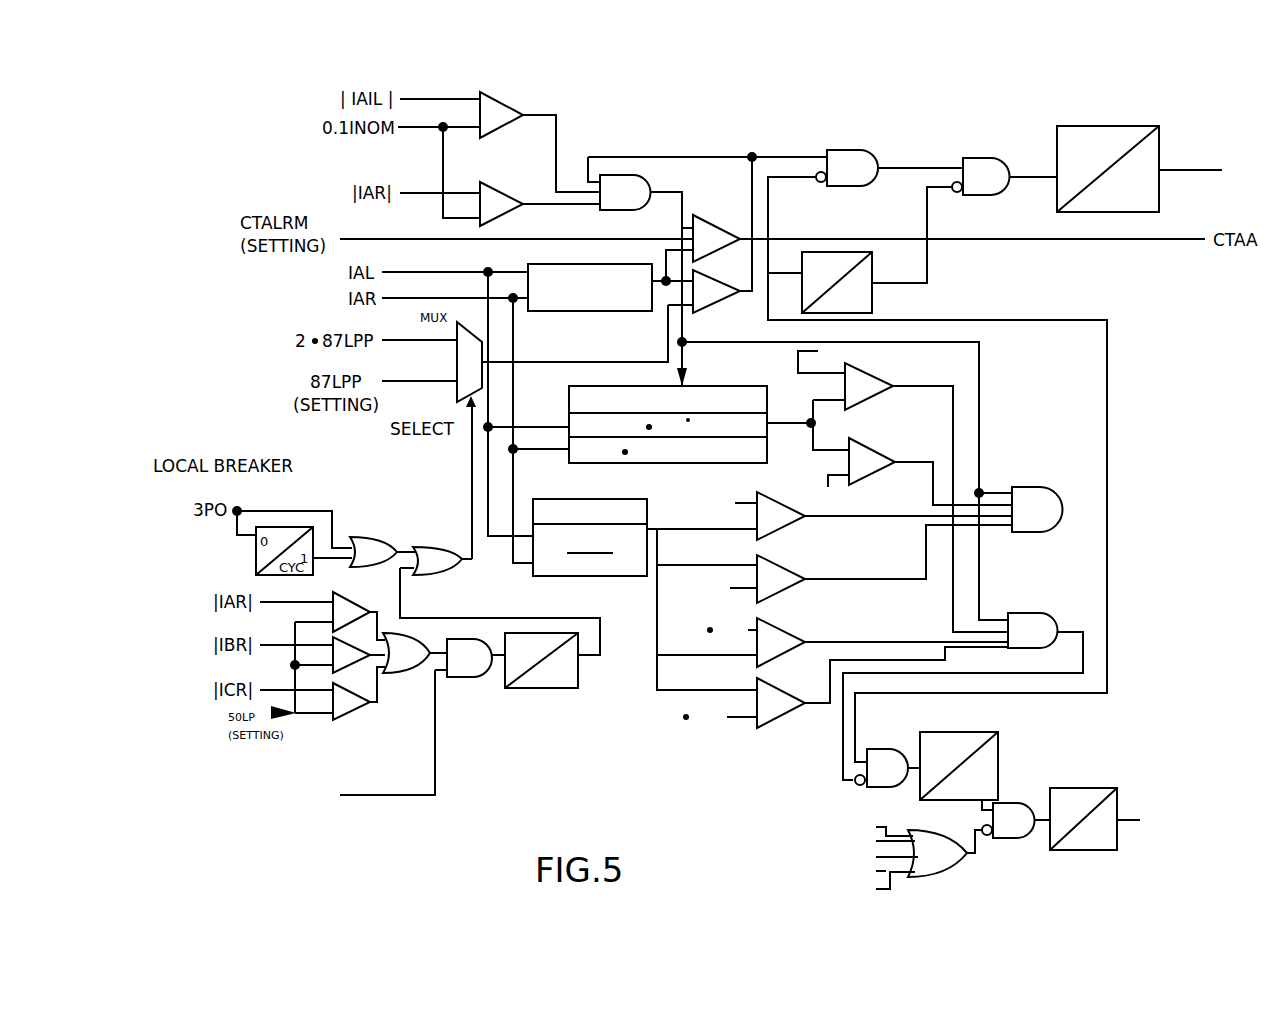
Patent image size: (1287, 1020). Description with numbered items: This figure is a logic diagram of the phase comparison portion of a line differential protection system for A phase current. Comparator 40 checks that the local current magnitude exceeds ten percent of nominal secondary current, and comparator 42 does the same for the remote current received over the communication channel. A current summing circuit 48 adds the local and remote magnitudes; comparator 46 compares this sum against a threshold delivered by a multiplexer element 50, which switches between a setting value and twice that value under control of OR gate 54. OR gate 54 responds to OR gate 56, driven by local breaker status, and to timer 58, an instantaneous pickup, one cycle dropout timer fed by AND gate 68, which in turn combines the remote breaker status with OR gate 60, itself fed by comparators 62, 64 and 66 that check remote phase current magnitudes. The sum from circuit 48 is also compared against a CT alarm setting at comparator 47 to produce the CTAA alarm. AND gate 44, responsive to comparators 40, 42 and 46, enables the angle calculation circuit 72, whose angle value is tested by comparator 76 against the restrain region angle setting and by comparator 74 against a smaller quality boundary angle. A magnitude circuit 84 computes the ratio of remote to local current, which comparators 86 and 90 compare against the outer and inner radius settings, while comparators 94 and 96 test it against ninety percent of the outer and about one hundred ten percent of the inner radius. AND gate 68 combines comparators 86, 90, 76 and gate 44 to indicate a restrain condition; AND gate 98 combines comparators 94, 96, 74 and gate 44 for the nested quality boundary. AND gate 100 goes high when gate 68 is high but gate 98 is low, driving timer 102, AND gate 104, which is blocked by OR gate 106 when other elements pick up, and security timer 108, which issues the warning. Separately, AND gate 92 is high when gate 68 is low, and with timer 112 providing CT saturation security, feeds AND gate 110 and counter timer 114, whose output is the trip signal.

The comparator 40 is at (503, 97).
The comparator 42 is at (500, 184).
The AND gate 44 is at (628, 176).
The comparator 46 is at (716, 306).
The comparator 47 is at (712, 216).
The current summing circuit 48 is at (588, 311).
The multiplexer element 50 is at (457, 358).
The OR gate 54 is at (445, 575).
The OR gate 56 is at (372, 537).
The timer 58 is at (530, 688).
The OR gate 60 is at (415, 673).
The comparator 62 is at (355, 597).
The comparator 64 is at (362, 665).
The comparator 66 is at (345, 720).
The AND gate 68 is at (1025, 487).
The angle calculation circuit 72 is at (745, 386).
The comparator 74 is at (872, 404).
The comparator 76 is at (873, 440).
The magnitude circuit 84 is at (568, 499).
The comparator 86 is at (798, 478).
The comparator 90 is at (780, 556).
The AND gate 92 is at (855, 150).
The comparator 94 is at (780, 620).
The comparator 96 is at (780, 725).
The AND gate 98 is at (1022, 613).
The AND gate 100 is at (880, 787).
The timer 102 is at (955, 732).
The AND gate 104 is at (1013, 803).
The OR gate 106 is at (968, 865).
The security timer 108 is at (1117, 790).
The AND gate 110 is at (985, 158).
The timer 112 is at (872, 300).
The timer 114 is at (1159, 197).